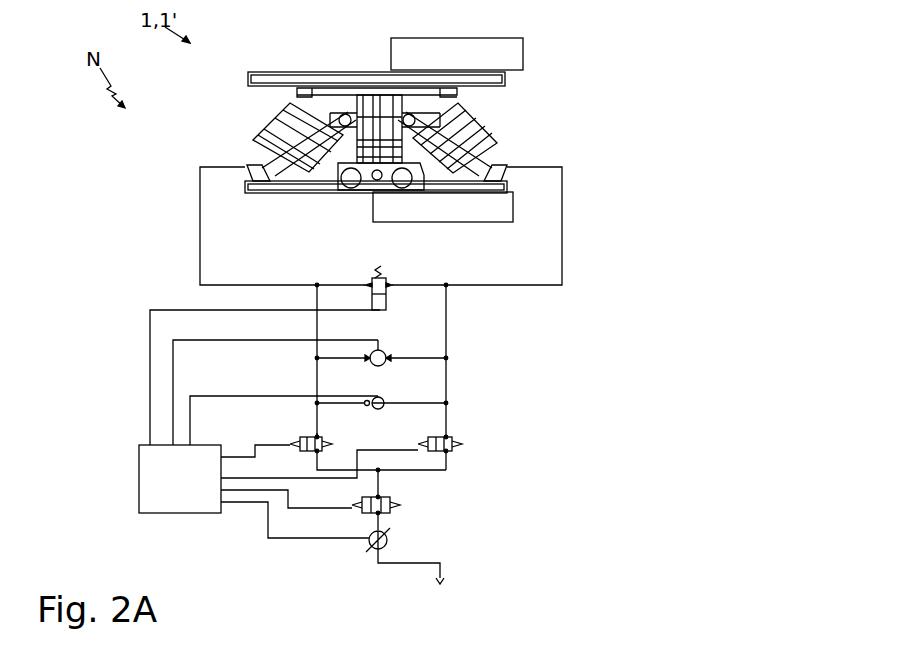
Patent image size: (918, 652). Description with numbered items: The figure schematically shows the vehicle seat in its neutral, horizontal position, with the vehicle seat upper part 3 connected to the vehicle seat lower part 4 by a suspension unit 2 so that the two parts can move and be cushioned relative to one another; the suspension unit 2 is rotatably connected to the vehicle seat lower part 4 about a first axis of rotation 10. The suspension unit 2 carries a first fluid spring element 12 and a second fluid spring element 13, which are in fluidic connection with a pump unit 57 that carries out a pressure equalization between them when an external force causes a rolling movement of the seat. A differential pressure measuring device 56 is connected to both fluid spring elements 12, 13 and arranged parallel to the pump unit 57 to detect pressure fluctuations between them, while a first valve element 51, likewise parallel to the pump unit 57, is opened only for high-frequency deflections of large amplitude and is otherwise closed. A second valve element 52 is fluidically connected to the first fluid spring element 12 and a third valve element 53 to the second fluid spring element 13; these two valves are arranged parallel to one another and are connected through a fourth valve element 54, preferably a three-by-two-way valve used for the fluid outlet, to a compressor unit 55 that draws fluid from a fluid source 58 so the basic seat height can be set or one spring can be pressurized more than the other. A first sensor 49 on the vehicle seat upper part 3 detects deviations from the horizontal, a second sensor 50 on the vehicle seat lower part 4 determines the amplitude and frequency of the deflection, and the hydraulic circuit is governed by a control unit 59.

The suspension unit 2 is at (245, 100).
The vehicle seat upper part 3 is at (258, 71).
The vehicle seat lower part 4 is at (262, 194).
The first axis of rotation 10 is at (375, 184).
The first fluid spring element 12 is at (482, 118).
The second fluid spring element 13 is at (262, 138).
The first sensor 49 is at (523, 55).
The second sensor 50 is at (513, 207).
The first valve element 51 is at (386, 300).
The second valve element 52 is at (450, 436).
The third valve element 53 is at (297, 438).
The fourth valve element 54 is at (392, 500).
The compressor unit 55 is at (387, 536).
The differential pressure measuring device 56 is at (382, 396).
The pump unit 57 is at (388, 352).
The fluid source 58 is at (446, 581).
The control unit 59 is at (176, 514).